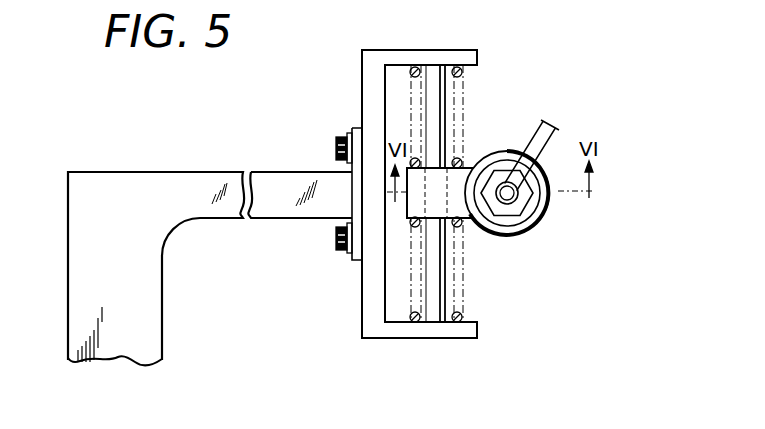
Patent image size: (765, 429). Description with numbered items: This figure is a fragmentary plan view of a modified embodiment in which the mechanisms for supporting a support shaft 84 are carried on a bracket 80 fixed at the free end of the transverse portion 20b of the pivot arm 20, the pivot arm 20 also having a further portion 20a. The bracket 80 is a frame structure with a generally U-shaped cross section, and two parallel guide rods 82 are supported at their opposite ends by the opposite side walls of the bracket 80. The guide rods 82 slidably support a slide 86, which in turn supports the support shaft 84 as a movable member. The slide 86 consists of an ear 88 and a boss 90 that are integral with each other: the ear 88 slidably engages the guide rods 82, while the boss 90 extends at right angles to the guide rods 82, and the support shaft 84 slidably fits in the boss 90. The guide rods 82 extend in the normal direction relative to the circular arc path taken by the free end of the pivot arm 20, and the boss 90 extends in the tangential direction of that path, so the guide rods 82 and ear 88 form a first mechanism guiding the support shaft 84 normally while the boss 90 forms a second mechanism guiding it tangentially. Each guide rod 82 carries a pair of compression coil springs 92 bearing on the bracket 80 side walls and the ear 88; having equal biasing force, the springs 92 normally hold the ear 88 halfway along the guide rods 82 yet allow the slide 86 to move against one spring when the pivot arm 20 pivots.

The pivot arm 20 is at (210, 252).
The vertical portion of bracket 20a is at (152, 338).
The transverse portion 20b is at (139, 183).
The bracket 80 is at (372, 67).
The guide rods 82 is at (435, 71).
The support shaft 84 is at (506, 204).
The slide 86 is at (487, 141).
The ear 88 is at (441, 222).
The boss 90 is at (543, 160).
The compression coil springs 92 is at (463, 73).